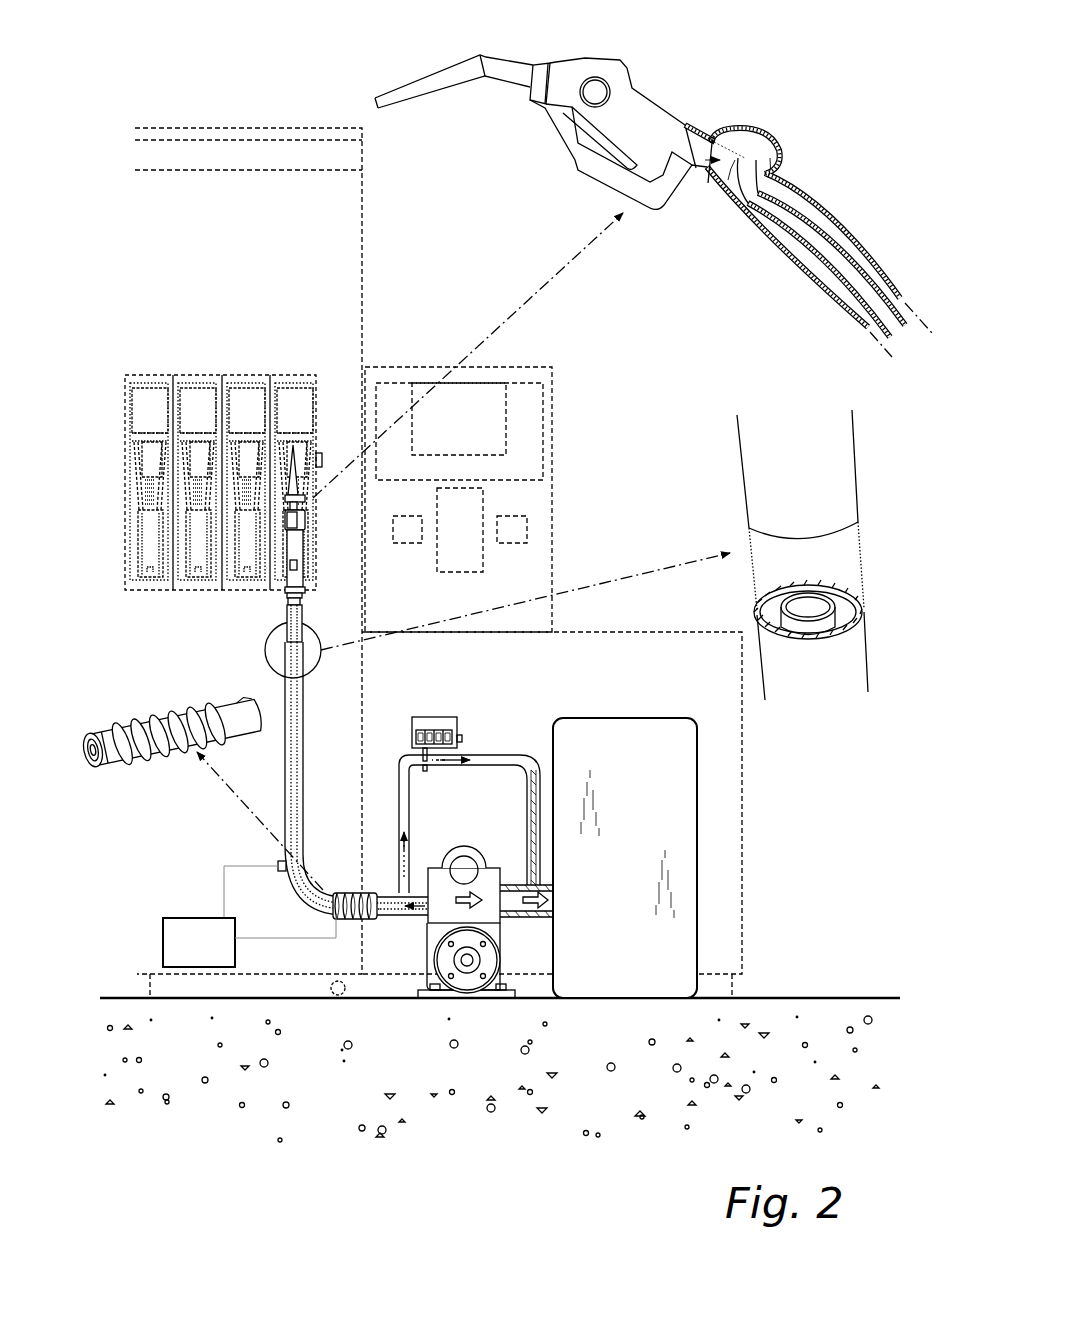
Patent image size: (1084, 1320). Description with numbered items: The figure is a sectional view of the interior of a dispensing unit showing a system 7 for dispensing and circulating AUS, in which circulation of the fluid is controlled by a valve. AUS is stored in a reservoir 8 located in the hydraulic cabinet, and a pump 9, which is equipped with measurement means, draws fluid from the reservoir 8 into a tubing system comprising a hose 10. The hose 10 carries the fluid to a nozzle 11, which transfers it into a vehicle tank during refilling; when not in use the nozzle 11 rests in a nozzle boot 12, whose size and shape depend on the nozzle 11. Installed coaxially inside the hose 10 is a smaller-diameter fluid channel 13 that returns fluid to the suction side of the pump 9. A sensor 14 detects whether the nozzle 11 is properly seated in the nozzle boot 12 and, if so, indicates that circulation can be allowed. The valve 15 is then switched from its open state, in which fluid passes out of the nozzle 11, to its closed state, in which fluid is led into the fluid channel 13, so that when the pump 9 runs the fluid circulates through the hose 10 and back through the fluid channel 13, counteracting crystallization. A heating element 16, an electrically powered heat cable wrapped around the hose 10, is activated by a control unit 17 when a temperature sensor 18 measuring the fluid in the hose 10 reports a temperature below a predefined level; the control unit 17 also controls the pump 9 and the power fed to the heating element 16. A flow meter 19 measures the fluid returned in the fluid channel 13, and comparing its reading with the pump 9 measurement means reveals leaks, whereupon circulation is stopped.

The system for dispensing and circulating AUS 7 is at (514, 684).
The reservoir 8 is at (697, 803).
The pump 9 is at (428, 930).
The hose 10 is at (285, 770).
The nozzle 11 is at (303, 540).
The nozzle boot 12 is at (287, 375).
The fluid channel 13 is at (830, 600).
The sensor 14 is at (322, 456).
The valve 15 is at (712, 185).
The heating element 16 is at (352, 920).
The control unit 17 is at (163, 950).
The temperature sensor 18 is at (278, 866).
The flow meter 19 is at (428, 717).